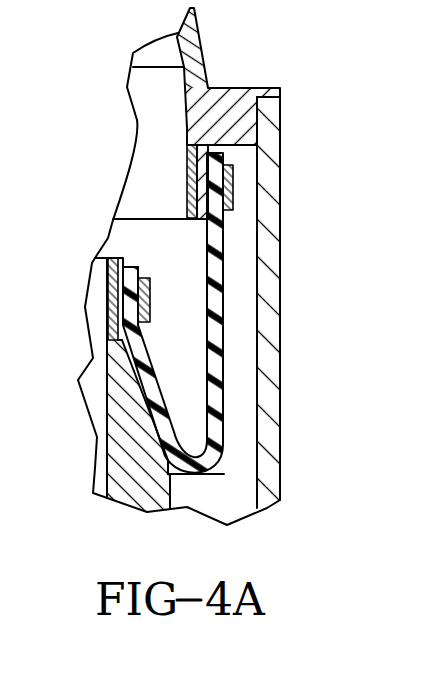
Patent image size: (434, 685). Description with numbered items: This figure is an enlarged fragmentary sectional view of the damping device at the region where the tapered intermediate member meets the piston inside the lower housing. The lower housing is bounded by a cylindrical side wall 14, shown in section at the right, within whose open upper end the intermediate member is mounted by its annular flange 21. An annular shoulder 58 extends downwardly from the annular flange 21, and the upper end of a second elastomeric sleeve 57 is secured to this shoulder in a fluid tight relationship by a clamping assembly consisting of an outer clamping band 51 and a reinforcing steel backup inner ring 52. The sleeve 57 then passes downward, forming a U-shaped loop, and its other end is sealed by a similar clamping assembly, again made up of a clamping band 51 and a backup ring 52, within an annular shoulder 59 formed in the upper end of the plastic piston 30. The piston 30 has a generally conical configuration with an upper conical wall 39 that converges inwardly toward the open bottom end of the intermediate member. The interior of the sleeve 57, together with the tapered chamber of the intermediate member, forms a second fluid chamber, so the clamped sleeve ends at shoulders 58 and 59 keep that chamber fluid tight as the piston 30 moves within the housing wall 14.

The cylindrical side wall 14 is at (272, 425).
The annular flange 21 is at (225, 92).
The piston 30 is at (132, 487).
The upper conical wall 39 is at (173, 498).
The outer clamping band 51 is at (232, 199).
The backup inner ring 52 is at (187, 182).
The second elastomeric sleeve 57 is at (217, 355).
The annular shoulder 58 is at (205, 212).
The annular shoulder 59 is at (122, 258).